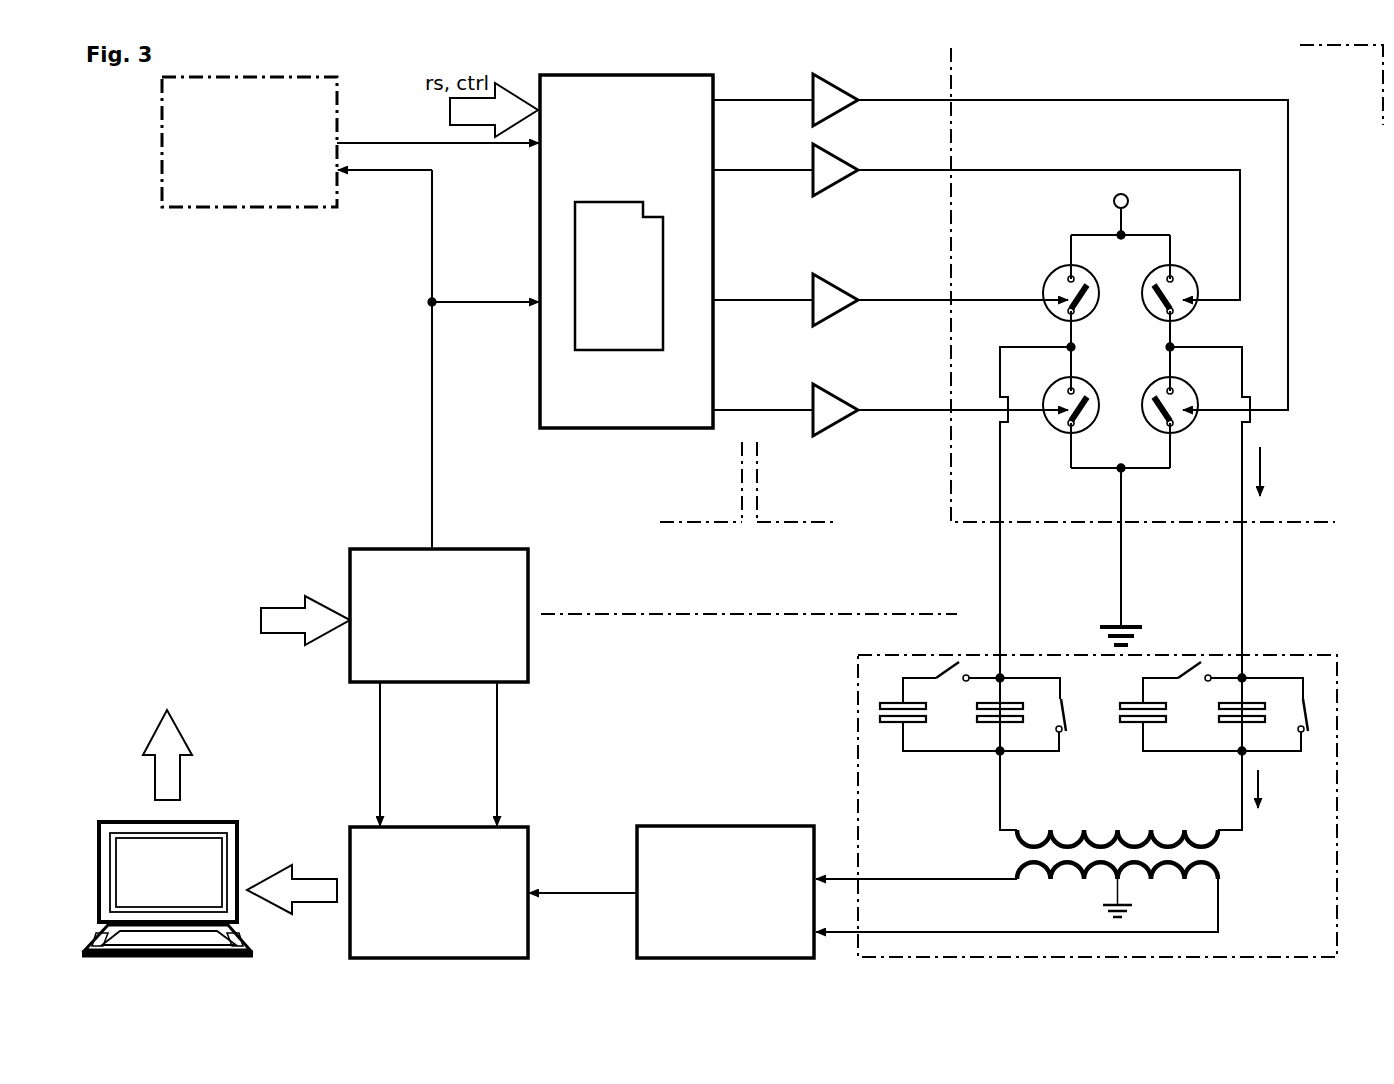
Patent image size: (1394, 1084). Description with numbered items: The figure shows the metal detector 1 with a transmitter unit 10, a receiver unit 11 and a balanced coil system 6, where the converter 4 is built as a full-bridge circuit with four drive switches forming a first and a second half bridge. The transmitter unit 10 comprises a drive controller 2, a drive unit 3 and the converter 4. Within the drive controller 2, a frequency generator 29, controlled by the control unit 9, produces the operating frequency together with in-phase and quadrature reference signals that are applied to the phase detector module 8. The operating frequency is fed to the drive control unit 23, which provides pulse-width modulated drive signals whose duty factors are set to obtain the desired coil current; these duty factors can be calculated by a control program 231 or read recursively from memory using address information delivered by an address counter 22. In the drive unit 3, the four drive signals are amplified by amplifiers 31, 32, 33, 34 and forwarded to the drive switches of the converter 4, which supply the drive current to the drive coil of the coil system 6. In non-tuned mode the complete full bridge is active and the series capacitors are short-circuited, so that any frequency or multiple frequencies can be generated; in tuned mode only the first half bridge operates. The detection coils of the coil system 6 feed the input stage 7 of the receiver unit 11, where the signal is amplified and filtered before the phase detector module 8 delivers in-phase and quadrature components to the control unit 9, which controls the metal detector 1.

The metal detector 1 is at (1341, 85).
The drive controller 2 is at (647, 482).
The drive unit 3 is at (840, 482).
The converter 4 is at (1143, 438).
The balanced coil system 6 is at (1076, 806).
The input stage 7 is at (671, 892).
The phase detector module 8 is at (387, 892).
The control unit 9 is at (173, 832).
The transmitter unit 10 is at (749, 597).
The receiver unit 11 is at (565, 639).
The address counter 22 is at (350, 313).
The drive control unit 23 is at (626, 251).
The frequency generator 29 is at (382, 664).
The amplifier 31 is at (890, 289).
The amplifier 32 is at (890, 399).
The amplifier 33 is at (976, 210).
The amplifier 34 is at (1000, 228).
The control program 231 is at (619, 276).